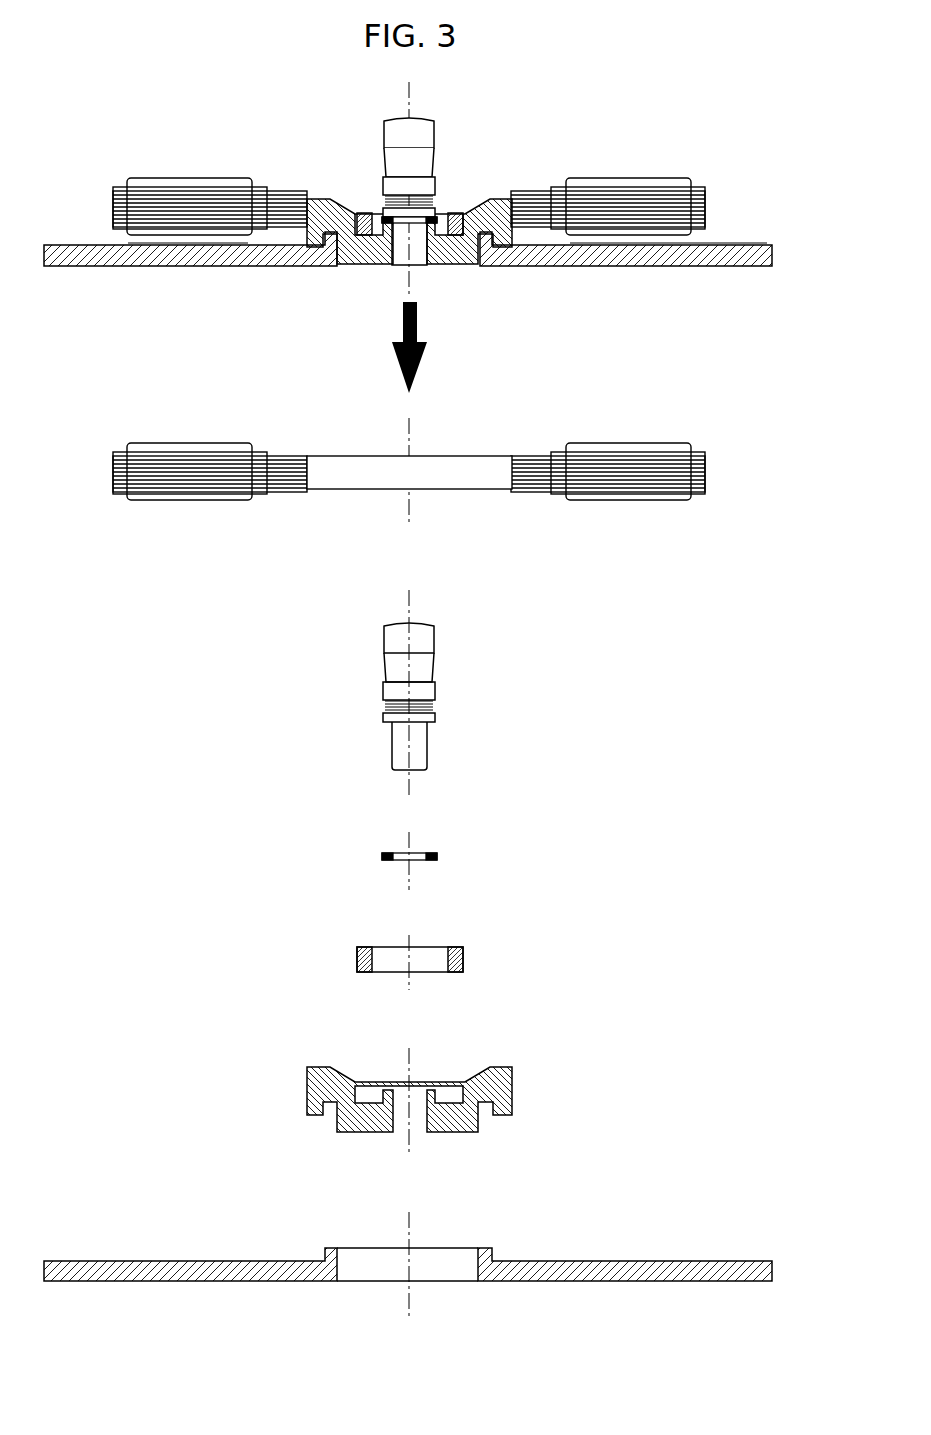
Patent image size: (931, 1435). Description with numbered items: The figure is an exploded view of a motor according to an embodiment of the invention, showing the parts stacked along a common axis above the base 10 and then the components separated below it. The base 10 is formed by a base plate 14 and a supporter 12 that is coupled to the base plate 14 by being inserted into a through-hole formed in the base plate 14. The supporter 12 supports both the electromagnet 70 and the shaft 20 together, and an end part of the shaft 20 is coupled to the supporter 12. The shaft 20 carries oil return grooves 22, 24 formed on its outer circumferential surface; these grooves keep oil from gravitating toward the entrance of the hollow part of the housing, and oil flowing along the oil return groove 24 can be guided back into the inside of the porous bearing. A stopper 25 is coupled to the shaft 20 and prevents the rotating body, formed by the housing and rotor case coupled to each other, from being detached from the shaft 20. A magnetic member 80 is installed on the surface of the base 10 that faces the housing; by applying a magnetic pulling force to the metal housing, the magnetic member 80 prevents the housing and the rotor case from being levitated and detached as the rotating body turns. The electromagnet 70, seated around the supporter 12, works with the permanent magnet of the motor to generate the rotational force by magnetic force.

The base 10 is at (545, 352).
The supporter 12 is at (462, 264).
The base plate 14 is at (540, 264).
The shaft 20 is at (458, 413).
The oil return groove 22 is at (434, 668).
The oil return groove 24 is at (434, 709).
The stopper 25 is at (383, 224).
The electromagnet 70 is at (657, 195).
The magnetic member 80 is at (456, 212).